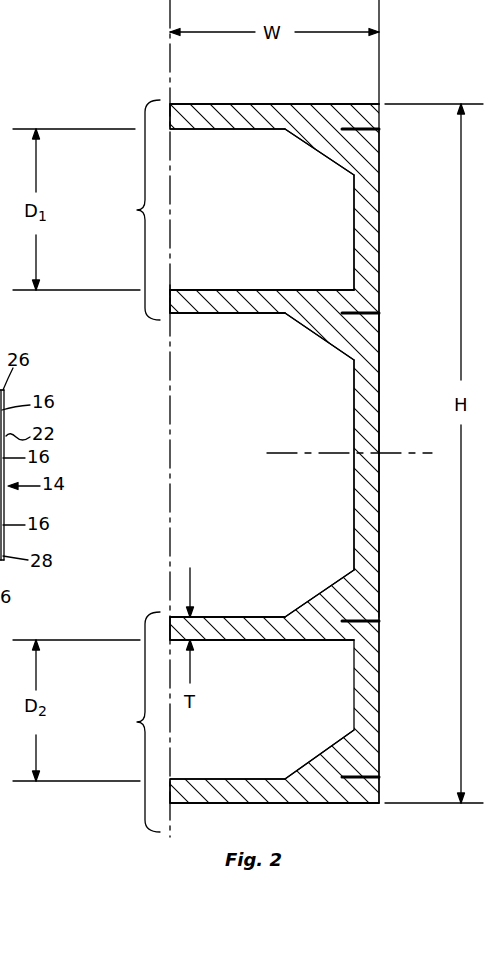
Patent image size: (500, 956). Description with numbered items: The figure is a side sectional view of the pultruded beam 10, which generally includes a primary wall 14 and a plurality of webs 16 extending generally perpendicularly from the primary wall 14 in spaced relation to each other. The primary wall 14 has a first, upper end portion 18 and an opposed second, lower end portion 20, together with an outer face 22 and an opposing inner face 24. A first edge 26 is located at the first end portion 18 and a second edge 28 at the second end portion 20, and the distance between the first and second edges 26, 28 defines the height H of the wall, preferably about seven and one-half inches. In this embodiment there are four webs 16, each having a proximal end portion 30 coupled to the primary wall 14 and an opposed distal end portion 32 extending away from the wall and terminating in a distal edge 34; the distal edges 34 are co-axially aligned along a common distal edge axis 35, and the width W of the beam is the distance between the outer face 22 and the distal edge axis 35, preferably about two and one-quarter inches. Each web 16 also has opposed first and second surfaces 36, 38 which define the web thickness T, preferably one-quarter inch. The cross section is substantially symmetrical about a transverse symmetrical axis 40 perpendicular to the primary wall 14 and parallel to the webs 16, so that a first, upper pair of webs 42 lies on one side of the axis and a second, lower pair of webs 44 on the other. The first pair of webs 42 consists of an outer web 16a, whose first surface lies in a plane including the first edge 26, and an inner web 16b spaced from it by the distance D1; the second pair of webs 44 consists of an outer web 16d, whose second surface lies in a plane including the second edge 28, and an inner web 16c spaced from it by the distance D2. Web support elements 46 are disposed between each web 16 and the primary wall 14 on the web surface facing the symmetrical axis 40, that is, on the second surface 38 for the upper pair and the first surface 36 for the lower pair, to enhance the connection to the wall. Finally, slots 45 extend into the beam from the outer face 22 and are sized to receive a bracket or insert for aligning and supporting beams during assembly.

The pultruded beam 10 is at (245, 95).
The primary wall 14 is at (390, 490).
The webs 16 is at (211, 458).
The outer web 16a is at (160, 111).
The inner web 16b is at (160, 300).
The inner web 16c is at (160, 622).
The outer web 16d is at (160, 800).
The first end portion 18 is at (372, 138).
The second end portion 20 is at (381, 787).
The outer face 22 is at (380, 227).
The inner face 24 is at (354, 527).
The first edge 26 is at (381, 104).
The second edge 28 is at (378, 803).
The proximal end portion 30 is at (329, 298).
The distal end portion 32 is at (178, 290).
The distal edge 34 is at (170, 292).
The distal edge axis 35 is at (172, 431).
The first surface 36 is at (249, 290).
The second surface 38 is at (231, 313).
The transverse symmetrical axis 40 is at (286, 453).
The first pair of webs 42 is at (135, 210).
The second pair of webs 44 is at (135, 722).
The slots 45 is at (381, 313).
The web support elements 46 is at (322, 142).